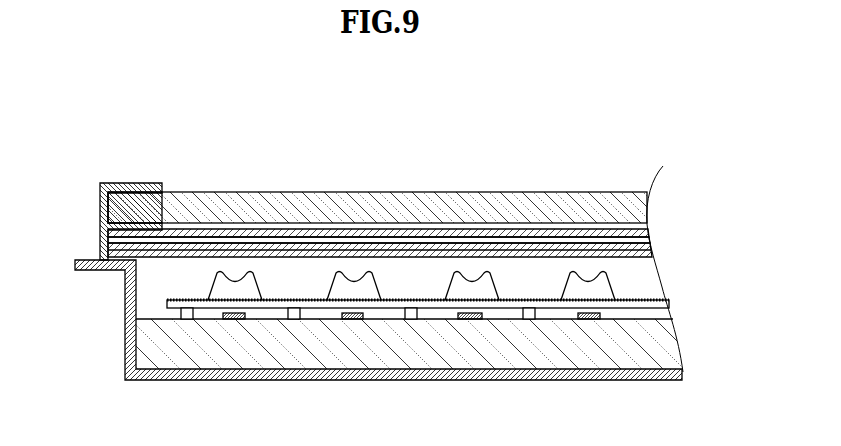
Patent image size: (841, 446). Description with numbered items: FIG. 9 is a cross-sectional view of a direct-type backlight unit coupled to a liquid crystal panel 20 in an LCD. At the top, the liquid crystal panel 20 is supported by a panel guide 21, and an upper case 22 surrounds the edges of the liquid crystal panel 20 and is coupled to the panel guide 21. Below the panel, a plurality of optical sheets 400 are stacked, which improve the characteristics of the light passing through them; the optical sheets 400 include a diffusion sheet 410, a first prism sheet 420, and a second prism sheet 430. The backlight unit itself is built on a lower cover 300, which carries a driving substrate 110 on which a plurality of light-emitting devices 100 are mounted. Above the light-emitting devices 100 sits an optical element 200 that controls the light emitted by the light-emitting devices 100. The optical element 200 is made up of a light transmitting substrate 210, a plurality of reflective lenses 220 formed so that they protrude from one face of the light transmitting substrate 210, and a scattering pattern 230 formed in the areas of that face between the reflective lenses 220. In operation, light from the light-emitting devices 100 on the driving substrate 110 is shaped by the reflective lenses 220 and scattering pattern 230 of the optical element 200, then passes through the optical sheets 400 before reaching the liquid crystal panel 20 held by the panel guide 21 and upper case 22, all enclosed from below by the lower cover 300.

The liquid crystal panel 20 is at (205, 195).
The panel guide 21 is at (355, 188).
The upper case 22 is at (102, 203).
The optical sheets 400 is at (380, 188).
The diffusion sheet 410 is at (267, 149).
The first prism sheet 420 is at (343, 240).
The second prism sheet 430 is at (294, 233).
The light-emitting device 100 is at (461, 321).
The driving substrate 110 is at (405, 356).
The optical element 200 is at (476, 294).
The light transmitting substrate 210 is at (671, 308).
The reflective lenses 220 is at (613, 271).
The scattering pattern 230 is at (668, 298).
The lower cover 300 is at (592, 376).